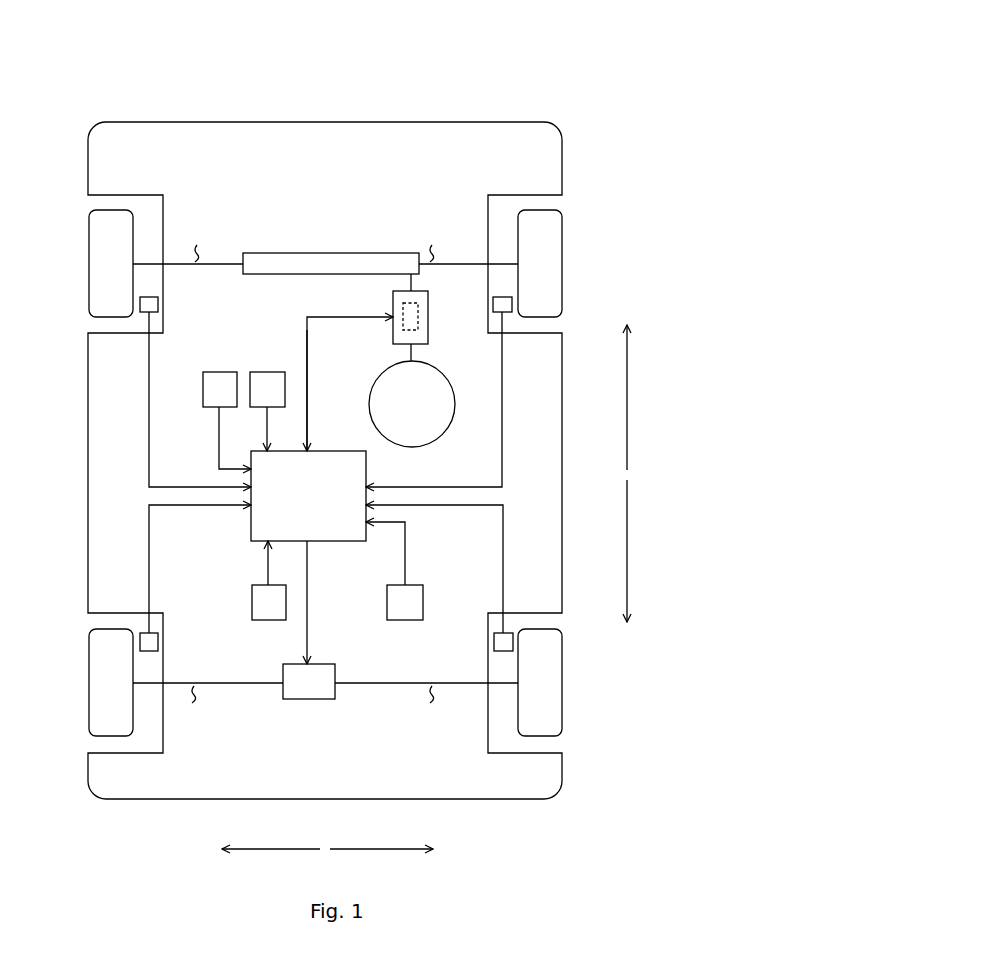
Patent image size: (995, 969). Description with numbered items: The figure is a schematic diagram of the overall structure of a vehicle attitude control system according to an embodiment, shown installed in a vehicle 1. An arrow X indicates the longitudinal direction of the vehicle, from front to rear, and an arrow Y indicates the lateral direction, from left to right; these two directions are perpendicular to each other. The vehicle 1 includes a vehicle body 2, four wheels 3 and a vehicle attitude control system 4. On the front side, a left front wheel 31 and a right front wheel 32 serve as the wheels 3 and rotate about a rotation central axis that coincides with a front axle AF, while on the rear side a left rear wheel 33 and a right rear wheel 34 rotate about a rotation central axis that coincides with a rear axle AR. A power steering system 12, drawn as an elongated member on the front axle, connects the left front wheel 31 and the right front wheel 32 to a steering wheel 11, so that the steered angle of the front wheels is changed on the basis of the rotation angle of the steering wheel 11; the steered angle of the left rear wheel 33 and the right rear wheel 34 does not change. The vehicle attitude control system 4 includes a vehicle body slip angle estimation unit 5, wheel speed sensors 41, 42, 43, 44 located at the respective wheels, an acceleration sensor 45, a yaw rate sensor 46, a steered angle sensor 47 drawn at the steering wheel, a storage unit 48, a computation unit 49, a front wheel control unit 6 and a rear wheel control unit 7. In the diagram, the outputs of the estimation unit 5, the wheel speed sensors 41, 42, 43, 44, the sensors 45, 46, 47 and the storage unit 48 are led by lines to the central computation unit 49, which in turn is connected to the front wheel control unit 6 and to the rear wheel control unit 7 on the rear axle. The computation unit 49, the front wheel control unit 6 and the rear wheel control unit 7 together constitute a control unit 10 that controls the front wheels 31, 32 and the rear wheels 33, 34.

The vehicle 1 is at (610, 57).
The vehicle body 2 is at (462, 121).
The wheels 3 is at (326, 481).
The vehicle attitude control system 4 is at (325, 190).
The vehicle body slip angle estimation unit 5 is at (265, 372).
The front wheel control unit 6 is at (427, 302).
The rear wheel control unit 7 is at (308, 700).
The control unit 10 is at (245, 524).
The steering wheel 11 is at (380, 368).
The power steering system 12 is at (279, 253).
The left front wheel 31 is at (98, 236).
The right front wheel 32 is at (554, 236).
The left rear wheel 33 is at (98, 710).
The right rear wheel 34 is at (554, 710).
The wheel speed sensor 41 is at (145, 318).
The wheel speed sensor 42 is at (507, 318).
The wheel speed sensor 43 is at (145, 632).
The wheel speed sensor 44 is at (509, 632).
The acceleration sensor 45 is at (217, 372).
The yaw rate sensor 46 is at (270, 621).
The steered angle sensor 47 is at (399, 305).
The storage unit 48 is at (405, 621).
The computation unit 49 is at (336, 451).